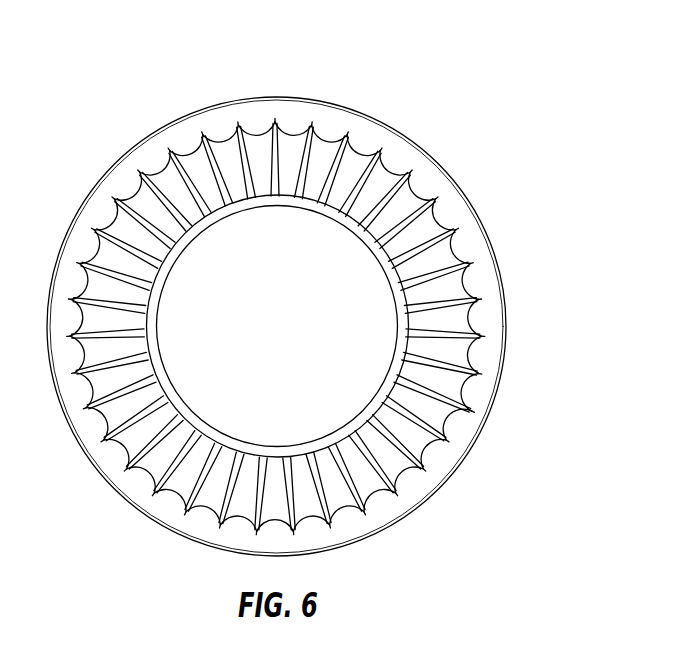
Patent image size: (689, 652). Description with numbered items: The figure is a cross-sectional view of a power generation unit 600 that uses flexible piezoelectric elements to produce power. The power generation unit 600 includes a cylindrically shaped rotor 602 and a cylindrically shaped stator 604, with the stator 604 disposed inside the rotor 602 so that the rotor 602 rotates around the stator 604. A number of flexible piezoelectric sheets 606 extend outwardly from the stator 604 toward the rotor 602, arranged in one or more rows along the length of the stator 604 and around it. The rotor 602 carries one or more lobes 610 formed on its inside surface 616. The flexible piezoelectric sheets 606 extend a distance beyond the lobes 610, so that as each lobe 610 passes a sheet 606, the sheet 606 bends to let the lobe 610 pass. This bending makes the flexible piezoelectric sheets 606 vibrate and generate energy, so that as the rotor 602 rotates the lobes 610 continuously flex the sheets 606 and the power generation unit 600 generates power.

The power generation unit 600 is at (481, 85).
The rotor 602 is at (442, 181).
The stator 604 is at (389, 278).
The flexible piezoelectric sheets 606 is at (225, 188).
The lobes 610 is at (329, 137).
The inside surface 616 is at (275, 121).